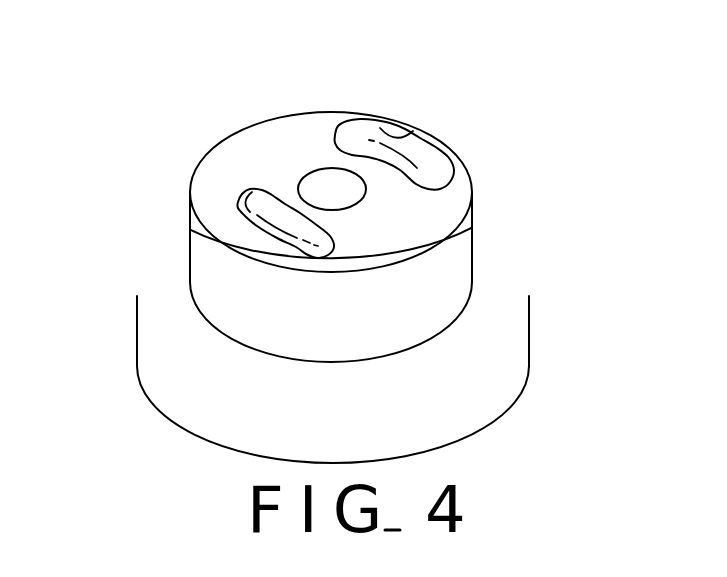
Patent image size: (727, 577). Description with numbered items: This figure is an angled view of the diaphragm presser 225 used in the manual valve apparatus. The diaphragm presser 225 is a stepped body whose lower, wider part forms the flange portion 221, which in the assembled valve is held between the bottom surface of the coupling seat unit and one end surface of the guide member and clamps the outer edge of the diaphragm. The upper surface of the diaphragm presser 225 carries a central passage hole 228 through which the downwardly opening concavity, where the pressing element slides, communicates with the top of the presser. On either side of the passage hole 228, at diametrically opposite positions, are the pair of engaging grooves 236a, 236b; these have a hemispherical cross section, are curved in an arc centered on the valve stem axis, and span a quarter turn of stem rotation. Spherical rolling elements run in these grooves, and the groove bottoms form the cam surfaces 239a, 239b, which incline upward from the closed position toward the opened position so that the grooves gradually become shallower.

The flange portion 221 is at (507, 373).
The diaphragm presser 225 is at (460, 258).
The passage hole 228 is at (323, 188).
The engaging groove 236a is at (245, 210).
The engaging groove 236b is at (416, 168).
The cam surface 239a is at (267, 236).
The cam surface 239b is at (418, 163).